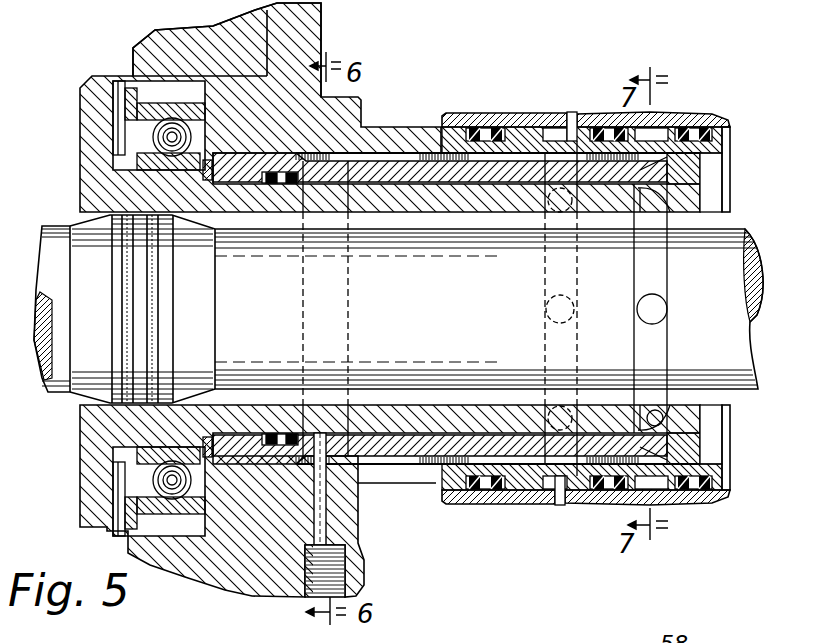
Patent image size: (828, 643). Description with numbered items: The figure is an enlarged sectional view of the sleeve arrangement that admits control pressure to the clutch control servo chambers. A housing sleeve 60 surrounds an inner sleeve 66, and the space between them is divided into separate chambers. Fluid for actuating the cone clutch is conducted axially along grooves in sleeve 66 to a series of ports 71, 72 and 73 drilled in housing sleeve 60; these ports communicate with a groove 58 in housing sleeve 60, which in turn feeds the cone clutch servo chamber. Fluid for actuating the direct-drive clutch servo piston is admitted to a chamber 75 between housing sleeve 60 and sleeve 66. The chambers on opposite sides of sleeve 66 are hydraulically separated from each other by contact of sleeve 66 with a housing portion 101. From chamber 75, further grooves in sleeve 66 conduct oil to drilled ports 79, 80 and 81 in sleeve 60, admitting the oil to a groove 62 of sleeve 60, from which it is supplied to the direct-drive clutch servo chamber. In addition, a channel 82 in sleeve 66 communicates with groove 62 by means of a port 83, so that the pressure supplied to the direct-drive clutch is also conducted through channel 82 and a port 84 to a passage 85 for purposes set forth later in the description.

The groove 58 is at (660, 135).
The housing sleeve 60 is at (363, 141).
The groove 62 is at (557, 118).
The sleeve 66 is at (398, 166).
The port 71 is at (662, 212).
The port 72 is at (665, 306).
The port 73 is at (650, 412).
The chamber 75 is at (348, 294).
The drilled port 79 is at (547, 196).
The drilled port 80 is at (546, 312).
The drilled port 81 is at (553, 412).
The channel 82 is at (442, 457).
The port 83 is at (558, 498).
The port 84 is at (320, 522).
The passage 85 is at (338, 574).
The housing portion 101 is at (311, 50).